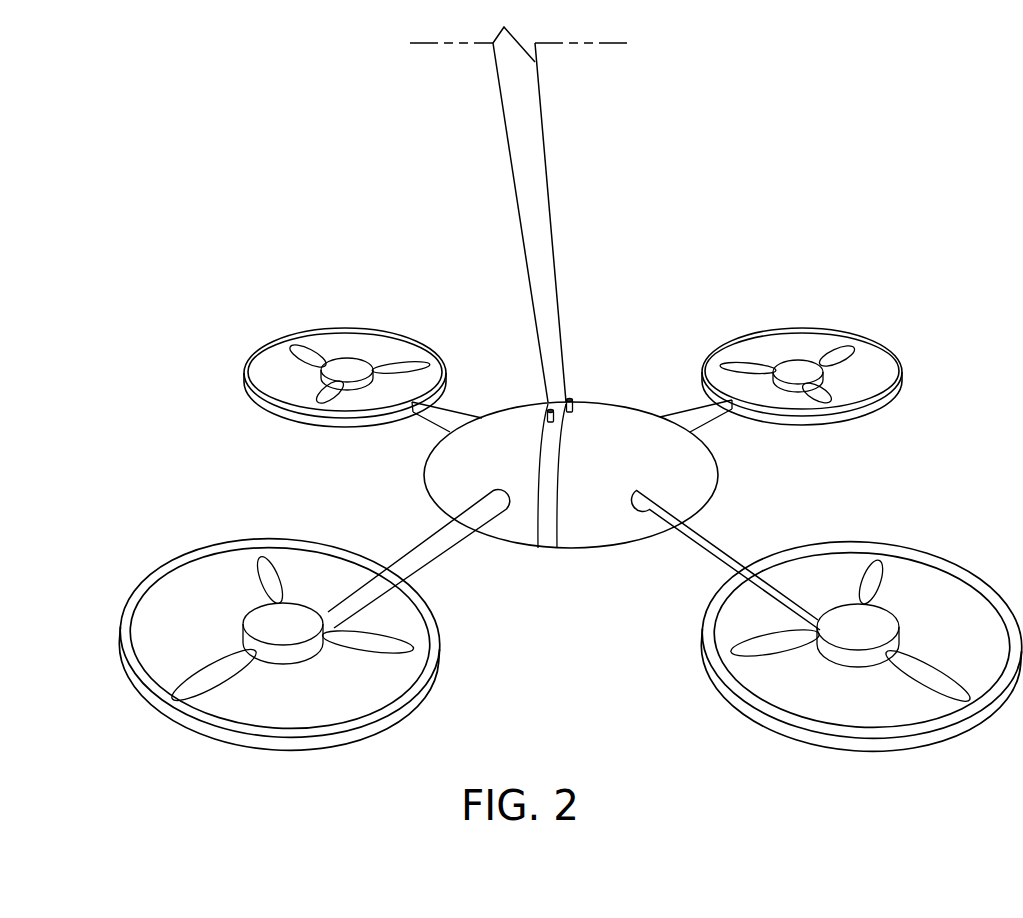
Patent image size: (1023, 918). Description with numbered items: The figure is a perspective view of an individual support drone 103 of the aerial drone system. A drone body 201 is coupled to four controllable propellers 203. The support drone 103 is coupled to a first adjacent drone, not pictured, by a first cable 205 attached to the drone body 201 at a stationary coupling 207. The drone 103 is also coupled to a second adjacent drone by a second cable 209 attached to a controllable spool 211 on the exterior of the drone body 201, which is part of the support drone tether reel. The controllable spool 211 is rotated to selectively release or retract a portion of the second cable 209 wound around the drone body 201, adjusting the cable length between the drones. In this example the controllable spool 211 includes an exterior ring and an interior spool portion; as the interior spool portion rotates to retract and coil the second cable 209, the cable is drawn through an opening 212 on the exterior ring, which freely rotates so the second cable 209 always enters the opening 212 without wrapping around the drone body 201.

The support drone 103 is at (190, 263).
The drone body 201 is at (424, 476).
The controllable propellers 203 is at (244, 373).
The first cable 205 is at (551, 230).
The stationary coupling 207 is at (571, 408).
The second cable 209 is at (522, 228).
The controllable spool 211 is at (553, 528).
The opening 212 is at (546, 419).